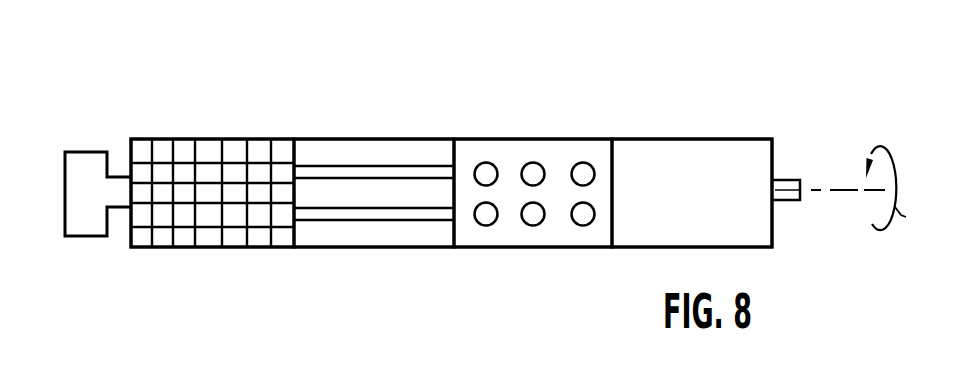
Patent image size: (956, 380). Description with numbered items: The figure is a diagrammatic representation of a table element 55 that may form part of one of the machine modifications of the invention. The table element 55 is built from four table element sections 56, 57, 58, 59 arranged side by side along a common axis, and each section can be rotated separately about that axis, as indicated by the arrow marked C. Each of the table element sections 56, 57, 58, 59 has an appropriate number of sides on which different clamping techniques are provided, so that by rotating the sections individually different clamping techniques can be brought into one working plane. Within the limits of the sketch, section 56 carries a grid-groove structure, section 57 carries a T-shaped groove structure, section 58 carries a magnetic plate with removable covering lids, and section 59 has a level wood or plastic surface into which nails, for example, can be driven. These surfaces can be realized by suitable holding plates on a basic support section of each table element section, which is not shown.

The table element 55 is at (748, 95).
The table element section 56 is at (228, 127).
The table element section 57 is at (384, 127).
The table element section 58 is at (562, 127).
The table element section 59 is at (691, 127).